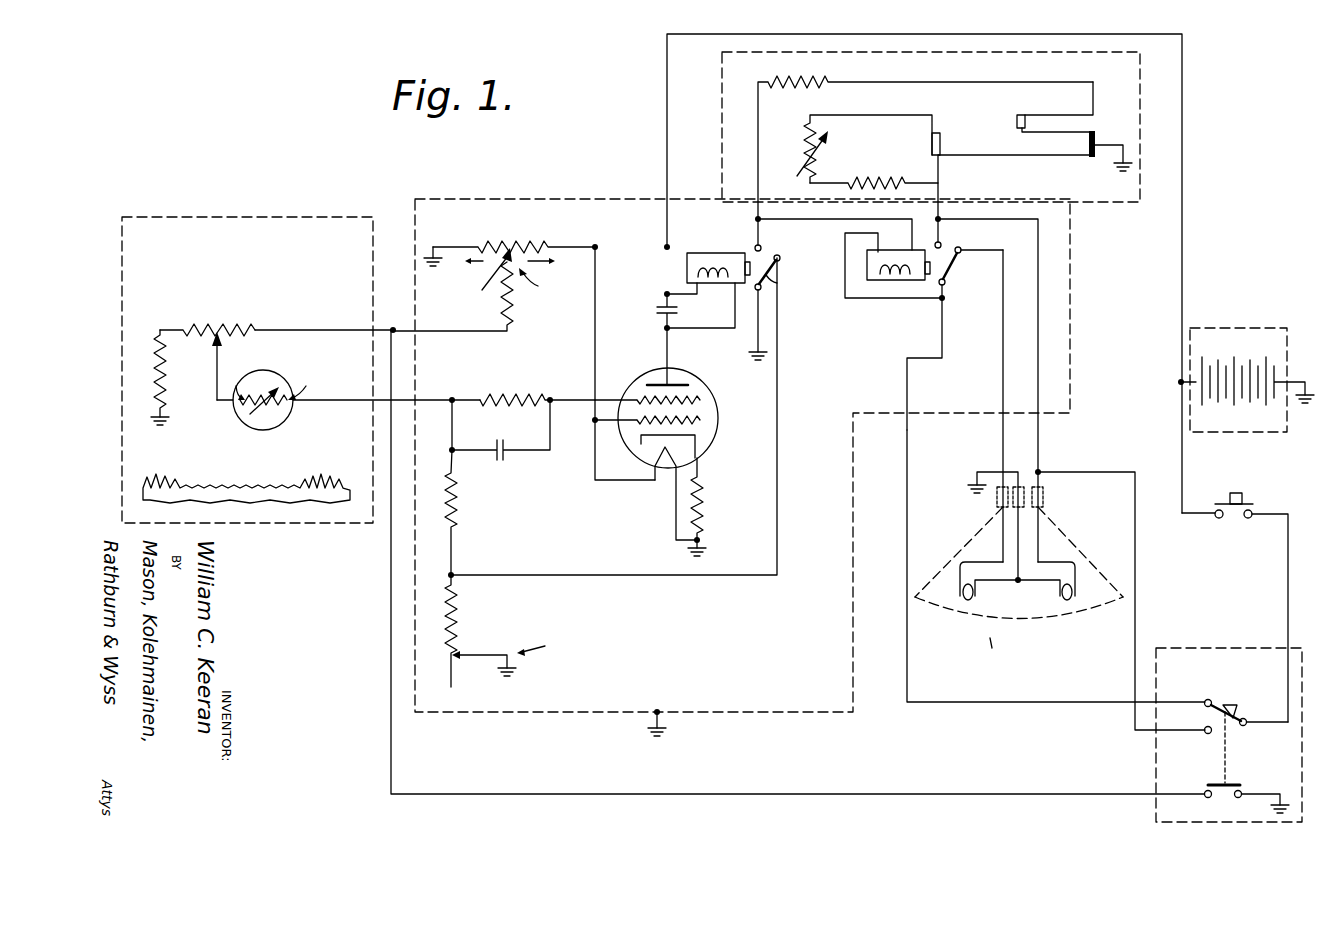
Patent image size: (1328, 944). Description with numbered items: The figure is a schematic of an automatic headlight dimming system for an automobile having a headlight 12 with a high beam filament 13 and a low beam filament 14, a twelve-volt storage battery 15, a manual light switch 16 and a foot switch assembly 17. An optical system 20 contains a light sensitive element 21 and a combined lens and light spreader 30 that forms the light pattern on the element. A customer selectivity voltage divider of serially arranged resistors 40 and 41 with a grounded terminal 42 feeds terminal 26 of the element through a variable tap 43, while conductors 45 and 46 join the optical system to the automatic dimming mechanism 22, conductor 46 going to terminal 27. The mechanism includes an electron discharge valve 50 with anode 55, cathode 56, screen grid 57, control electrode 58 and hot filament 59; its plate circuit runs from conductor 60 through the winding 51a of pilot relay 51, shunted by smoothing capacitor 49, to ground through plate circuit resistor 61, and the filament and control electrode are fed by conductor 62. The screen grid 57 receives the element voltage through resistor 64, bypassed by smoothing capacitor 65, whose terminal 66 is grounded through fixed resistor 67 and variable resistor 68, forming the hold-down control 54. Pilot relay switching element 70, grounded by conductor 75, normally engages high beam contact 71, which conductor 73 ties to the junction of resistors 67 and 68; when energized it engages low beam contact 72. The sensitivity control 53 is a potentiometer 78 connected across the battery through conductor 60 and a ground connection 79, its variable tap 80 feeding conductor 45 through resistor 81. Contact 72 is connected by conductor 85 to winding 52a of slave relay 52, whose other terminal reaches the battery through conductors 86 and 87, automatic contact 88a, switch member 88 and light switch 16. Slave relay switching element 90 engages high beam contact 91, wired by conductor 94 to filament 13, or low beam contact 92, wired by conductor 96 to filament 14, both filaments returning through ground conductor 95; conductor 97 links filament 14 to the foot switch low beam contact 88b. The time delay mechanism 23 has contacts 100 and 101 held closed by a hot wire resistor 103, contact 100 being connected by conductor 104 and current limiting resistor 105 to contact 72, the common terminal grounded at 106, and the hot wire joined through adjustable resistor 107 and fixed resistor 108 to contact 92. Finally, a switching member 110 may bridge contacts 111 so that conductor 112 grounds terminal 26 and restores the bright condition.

The headlight 12 is at (1019, 574).
The high beam filament 13 is at (942, 618).
The low beam filament 14 is at (1095, 618).
The storage battery 15 is at (1245, 328).
The manual light switch 16 is at (1237, 493).
The foot switch assembly 17 is at (1156, 760).
The optical system 20 is at (133, 217).
The light sensitive element 21 is at (278, 373).
The automatic dimming mechanism 22 is at (506, 199).
The time delay mechanism 23 is at (1110, 202).
The terminal 26 is at (233, 383).
The terminal 27 is at (306, 383).
The combined lens and light spreader 30 is at (290, 500).
The resistor 40 is at (165, 376).
The resistor 41 is at (211, 326).
The grounded terminal 42 is at (168, 420).
The variable tap 43 is at (226, 340).
The conductor 45 is at (328, 330).
The conductor 46 is at (330, 402).
The smoothing capacitor 49 is at (655, 306).
The electron discharge valve 50 is at (700, 372).
The pilot relay 51 is at (708, 269).
The winding 51a is at (712, 268).
The slave relay 52 is at (868, 302).
The winding 52a is at (890, 262).
The sensitivity control 53 is at (540, 281).
The hold-down control 54 is at (553, 655).
The anode 55 is at (650, 383).
The cathode 56 is at (697, 446).
The screen grid 57 is at (640, 398).
The control electrode 58 is at (703, 420).
The hot filament 59 is at (648, 462).
The conductor 60 is at (667, 77).
The plate circuit resistor 61 is at (703, 496).
The conductor 62 is at (595, 333).
The resistor 64 is at (512, 396).
The smoothing capacitor 65 is at (502, 462).
The terminal 66 is at (453, 398).
The fixed resistor 67 is at (456, 506).
The variable resistor 68 is at (458, 626).
The switching element 70 is at (762, 287).
The high beam contact 71 is at (781, 260).
The low beam contact 72 is at (763, 248).
The conductor 73 is at (715, 578).
The conductor 75 is at (762, 325).
The potentiometer 78 is at (514, 243).
The ground connection 79 is at (450, 262).
The variable tap 80 is at (490, 279).
The resistor 81 is at (516, 300).
The conductor 85 is at (821, 219).
The conductor 86 is at (895, 299).
The conductor 87 is at (967, 704).
The switch member 88 is at (1243, 726).
The automatic contact 88a is at (1212, 700).
The low beam contact 88b is at (1206, 734).
The switching element 90 is at (946, 284).
The high beam contact 91 is at (960, 254).
The low beam contact 92 is at (942, 246).
The conductor 94 is at (1003, 360).
The ground conductor 95 is at (982, 470).
The conductor 96 is at (1038, 255).
The conductor 97 is at (1137, 568).
The contact 100 is at (1020, 115).
The contact 101 is at (1018, 126).
The hot wire resistor 103 is at (1045, 157).
The conductor 104 is at (1028, 82).
The current limiting resistor 105 is at (790, 80).
The ground connection 106 is at (1118, 143).
The adjustable resistor 107 is at (820, 162).
The fixed resistor 108 is at (880, 180).
The switching member 110 is at (1232, 783).
The contacts 111 is at (1205, 797).
The conductor 112 is at (797, 792).